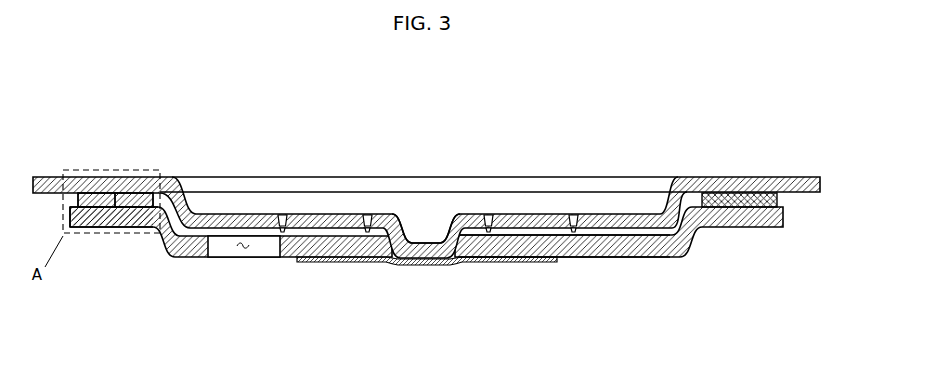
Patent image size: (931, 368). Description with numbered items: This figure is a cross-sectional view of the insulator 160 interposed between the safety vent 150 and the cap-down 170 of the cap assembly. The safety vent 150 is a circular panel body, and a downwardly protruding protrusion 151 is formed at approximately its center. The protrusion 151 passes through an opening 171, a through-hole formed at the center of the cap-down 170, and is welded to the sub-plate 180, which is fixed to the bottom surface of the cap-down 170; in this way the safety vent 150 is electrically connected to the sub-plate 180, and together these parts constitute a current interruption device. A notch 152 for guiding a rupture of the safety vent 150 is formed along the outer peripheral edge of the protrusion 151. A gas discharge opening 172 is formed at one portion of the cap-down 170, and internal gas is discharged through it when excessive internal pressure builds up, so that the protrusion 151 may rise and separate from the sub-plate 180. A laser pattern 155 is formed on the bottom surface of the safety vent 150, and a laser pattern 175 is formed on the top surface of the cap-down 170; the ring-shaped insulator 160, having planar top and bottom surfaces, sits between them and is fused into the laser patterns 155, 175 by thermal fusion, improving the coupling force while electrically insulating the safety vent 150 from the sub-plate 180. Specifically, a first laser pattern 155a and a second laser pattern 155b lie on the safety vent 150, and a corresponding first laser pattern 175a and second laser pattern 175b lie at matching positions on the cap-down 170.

The safety vent 150 is at (748, 177).
The protrusion 151 is at (423, 242).
The notch 152 is at (487, 215).
The laser pattern 155 is at (165, 118).
The first laser pattern 155a is at (138, 193).
The second laser pattern 155b is at (93, 193).
The insulator 160 is at (772, 203).
The cap-down 170 is at (744, 228).
The opening 171 is at (466, 243).
The gas discharge opening 172 is at (240, 258).
The laser pattern 175 is at (68, 280).
The first laser pattern 175a is at (138, 207).
The second laser pattern 175b is at (93, 207).
The sub-plate 180 is at (320, 263).